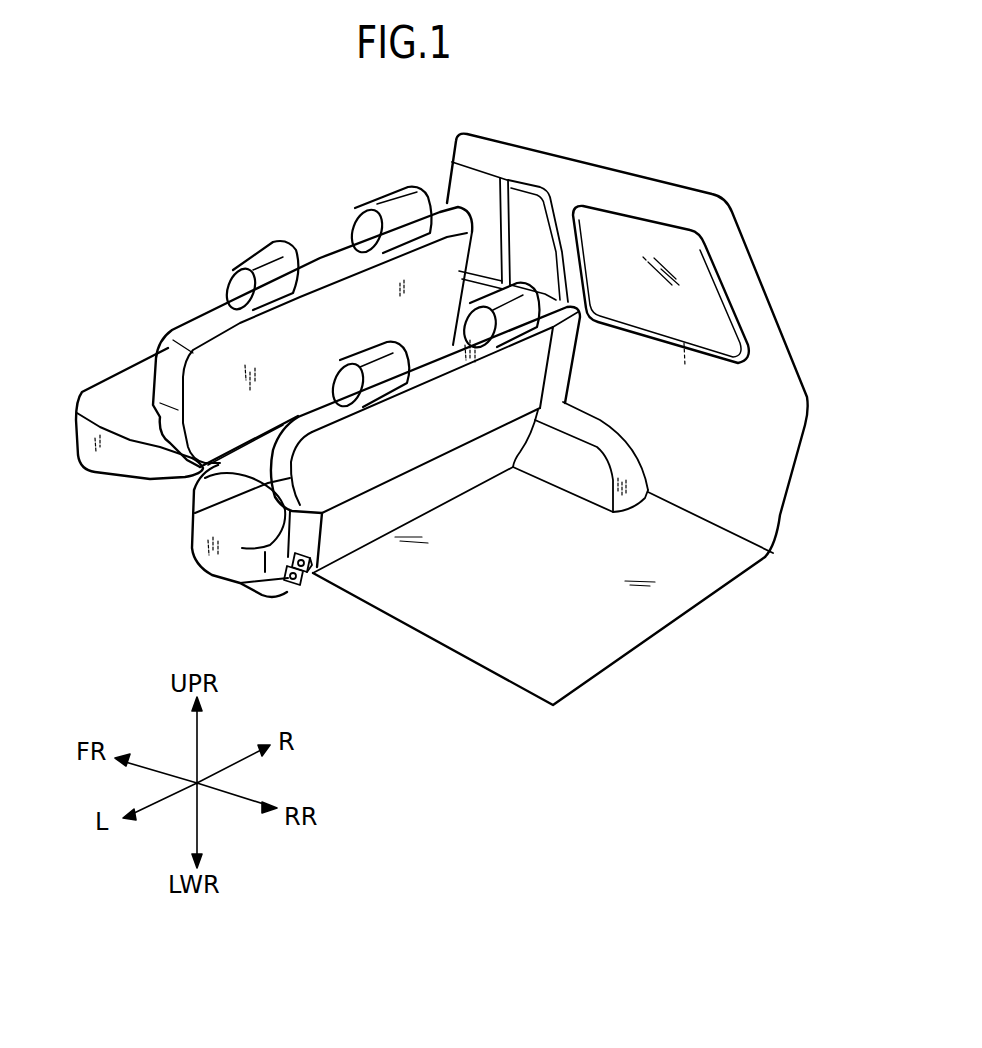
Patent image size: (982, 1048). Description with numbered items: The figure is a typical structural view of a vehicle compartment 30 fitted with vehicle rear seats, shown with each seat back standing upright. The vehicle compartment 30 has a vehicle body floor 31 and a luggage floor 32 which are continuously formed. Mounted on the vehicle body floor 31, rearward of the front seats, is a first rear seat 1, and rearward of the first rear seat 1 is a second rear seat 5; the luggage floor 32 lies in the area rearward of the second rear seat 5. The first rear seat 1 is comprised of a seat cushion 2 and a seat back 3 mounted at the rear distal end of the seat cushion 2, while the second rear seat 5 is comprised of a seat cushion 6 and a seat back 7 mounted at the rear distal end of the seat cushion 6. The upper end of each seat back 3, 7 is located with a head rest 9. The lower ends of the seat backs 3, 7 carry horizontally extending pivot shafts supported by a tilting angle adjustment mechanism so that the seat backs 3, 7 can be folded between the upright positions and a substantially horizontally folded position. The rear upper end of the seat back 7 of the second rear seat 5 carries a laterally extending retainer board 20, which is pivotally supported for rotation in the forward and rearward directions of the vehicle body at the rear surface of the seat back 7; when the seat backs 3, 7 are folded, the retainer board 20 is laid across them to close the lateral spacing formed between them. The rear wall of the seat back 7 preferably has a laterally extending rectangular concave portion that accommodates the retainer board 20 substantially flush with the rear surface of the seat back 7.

The first rear seat 1 is at (266, 343).
The seat cushion 2 is at (138, 327).
The seat back 3 is at (167, 367).
The second rear seat 5 is at (191, 531).
The seat cushion 6 is at (193, 543).
The seat back 7 is at (196, 513).
The head rest 9 is at (233, 282).
The retainer board 20 is at (358, 472).
The vehicle compartment 30 is at (713, 192).
The vehicle body floor 31 is at (274, 586).
The luggage floor 32 is at (597, 624).